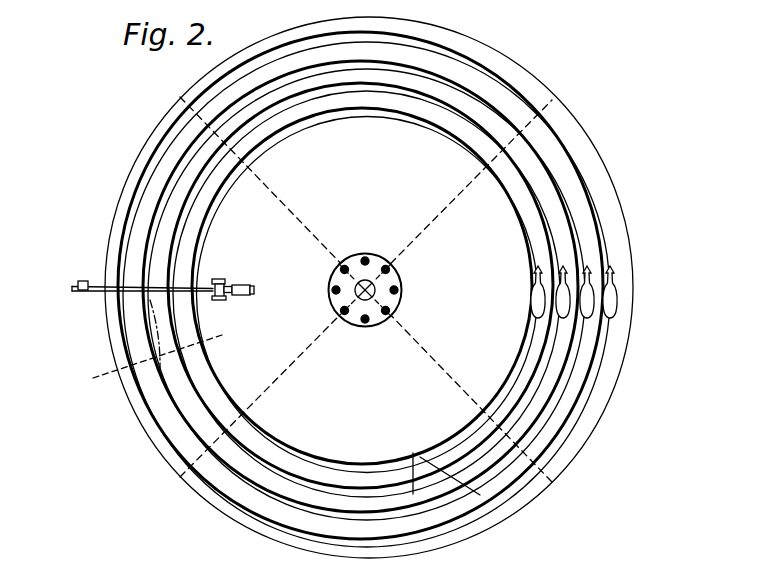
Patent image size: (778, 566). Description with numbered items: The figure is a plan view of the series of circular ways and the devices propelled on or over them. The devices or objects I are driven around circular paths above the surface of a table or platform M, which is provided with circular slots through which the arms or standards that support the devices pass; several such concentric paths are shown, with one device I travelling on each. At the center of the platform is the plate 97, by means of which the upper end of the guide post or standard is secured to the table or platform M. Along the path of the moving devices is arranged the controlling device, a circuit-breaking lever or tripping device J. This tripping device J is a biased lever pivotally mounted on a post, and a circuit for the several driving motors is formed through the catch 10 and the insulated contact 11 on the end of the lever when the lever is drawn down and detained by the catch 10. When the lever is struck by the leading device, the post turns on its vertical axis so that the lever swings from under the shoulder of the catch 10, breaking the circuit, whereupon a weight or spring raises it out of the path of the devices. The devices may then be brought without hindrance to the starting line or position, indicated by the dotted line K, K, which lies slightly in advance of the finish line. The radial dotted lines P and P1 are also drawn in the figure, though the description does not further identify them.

The catch 10 is at (80, 281).
The insulated contact 11 is at (75, 292).
The plate 97 is at (401, 294).
The table or platform M is at (369, 287).
The spoke P is at (366, 288).
The spoke P1 is at (366, 289).
The tripping device J is at (213, 278).
The starting line K is at (403, 455).
The devices or objects I is at (535, 271).